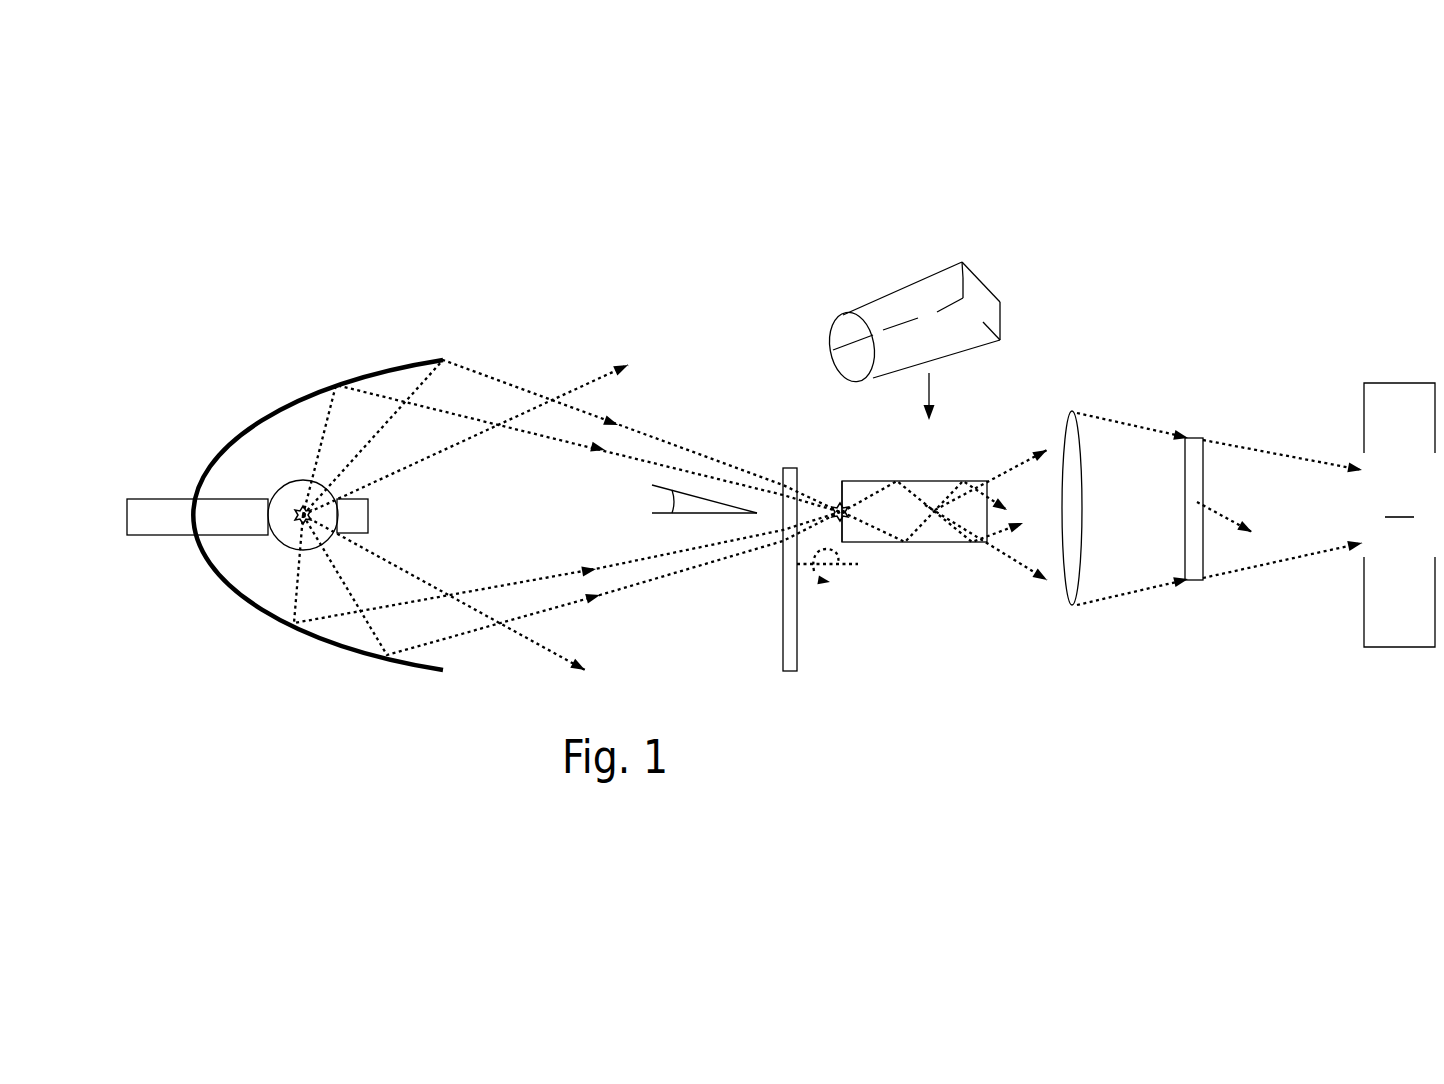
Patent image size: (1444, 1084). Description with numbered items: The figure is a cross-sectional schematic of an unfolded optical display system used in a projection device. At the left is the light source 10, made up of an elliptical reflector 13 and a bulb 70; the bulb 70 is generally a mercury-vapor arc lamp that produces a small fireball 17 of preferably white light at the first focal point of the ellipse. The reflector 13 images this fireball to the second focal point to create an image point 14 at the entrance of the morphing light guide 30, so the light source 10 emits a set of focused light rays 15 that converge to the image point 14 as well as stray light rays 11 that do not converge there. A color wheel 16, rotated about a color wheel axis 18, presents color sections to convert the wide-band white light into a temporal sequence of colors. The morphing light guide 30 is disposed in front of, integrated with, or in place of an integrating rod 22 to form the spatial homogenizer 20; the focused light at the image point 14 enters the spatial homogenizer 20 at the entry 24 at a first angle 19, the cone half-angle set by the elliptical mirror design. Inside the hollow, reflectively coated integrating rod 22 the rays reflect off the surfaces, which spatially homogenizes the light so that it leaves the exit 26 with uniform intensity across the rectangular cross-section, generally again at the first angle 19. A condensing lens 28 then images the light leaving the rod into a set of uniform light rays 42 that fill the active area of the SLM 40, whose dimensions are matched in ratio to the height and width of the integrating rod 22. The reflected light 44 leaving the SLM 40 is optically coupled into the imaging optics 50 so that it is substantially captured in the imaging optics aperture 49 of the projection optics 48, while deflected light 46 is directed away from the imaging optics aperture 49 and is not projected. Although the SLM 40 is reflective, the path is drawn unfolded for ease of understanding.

The light source 10 is at (222, 642).
The stray light rays 11 is at (460, 440).
The elliptical reflector 13 is at (237, 440).
The image point 14 is at (850, 506).
The focused light rays 15 is at (662, 438).
The color wheel 16 is at (797, 657).
The fireball 17 is at (293, 503).
The color wheel axis 18 is at (858, 564).
The first angle 19 is at (672, 498).
The spatial homogenizer 20 is at (945, 575).
The integrating rod 22 is at (883, 481).
The entry 24 is at (835, 497).
The exit 26 is at (1000, 458).
The condensing lens 28 is at (1080, 477).
The morphing light guide 30 is at (977, 273).
The SLM 40 is at (1190, 438).
The uniform light rays 42 is at (1130, 593).
The reflected light 44 is at (1255, 567).
The deflected light 46 is at (1225, 515).
The projection optics 48 is at (1364, 422).
The imaging optics aperture 49 is at (1400, 504).
The imaging optics 50 is at (1380, 675).
The bulb 70 is at (127, 500).